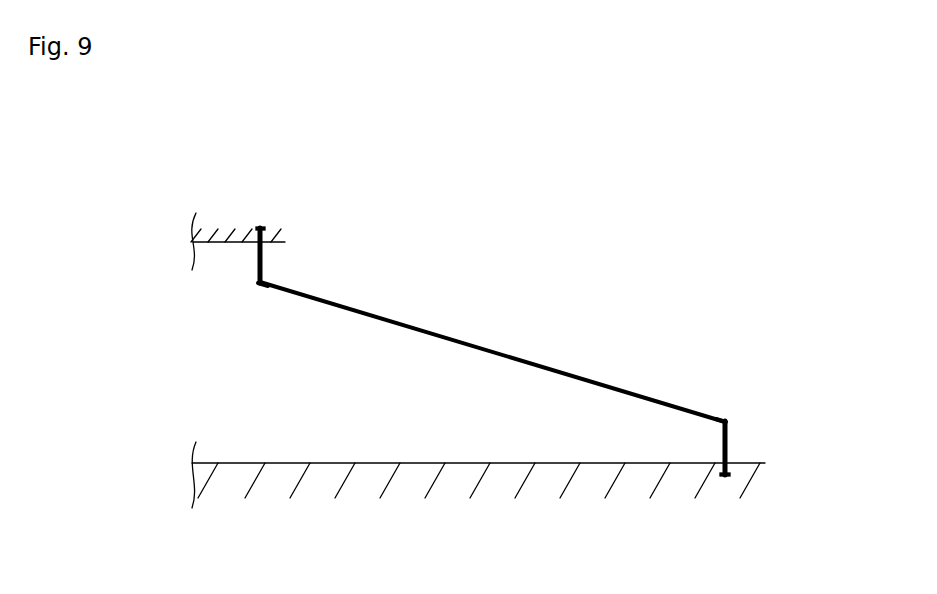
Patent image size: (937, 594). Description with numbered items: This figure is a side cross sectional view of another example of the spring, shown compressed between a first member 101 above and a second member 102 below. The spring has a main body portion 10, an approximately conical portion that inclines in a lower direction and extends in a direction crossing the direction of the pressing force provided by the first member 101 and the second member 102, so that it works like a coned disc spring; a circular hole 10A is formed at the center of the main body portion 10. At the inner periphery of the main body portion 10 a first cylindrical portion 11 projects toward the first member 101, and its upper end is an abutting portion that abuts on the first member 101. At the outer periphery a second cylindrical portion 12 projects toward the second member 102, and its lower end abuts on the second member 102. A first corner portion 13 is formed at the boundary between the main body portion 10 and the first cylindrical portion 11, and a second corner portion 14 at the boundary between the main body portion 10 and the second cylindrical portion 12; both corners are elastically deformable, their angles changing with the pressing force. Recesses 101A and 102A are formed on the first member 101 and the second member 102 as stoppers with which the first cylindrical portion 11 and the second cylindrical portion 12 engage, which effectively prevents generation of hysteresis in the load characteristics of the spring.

The main body portion 10 is at (440, 333).
The hole 10A is at (223, 280).
The first cylindrical portion 11 is at (264, 266).
The second cylindrical portion 12 is at (728, 445).
The first corner portion 13 is at (266, 291).
The second corner portion 14 is at (723, 422).
The first member 101 is at (252, 241).
The recess 101A is at (268, 229).
The second member 102 is at (265, 485).
The recess 102A is at (732, 468).